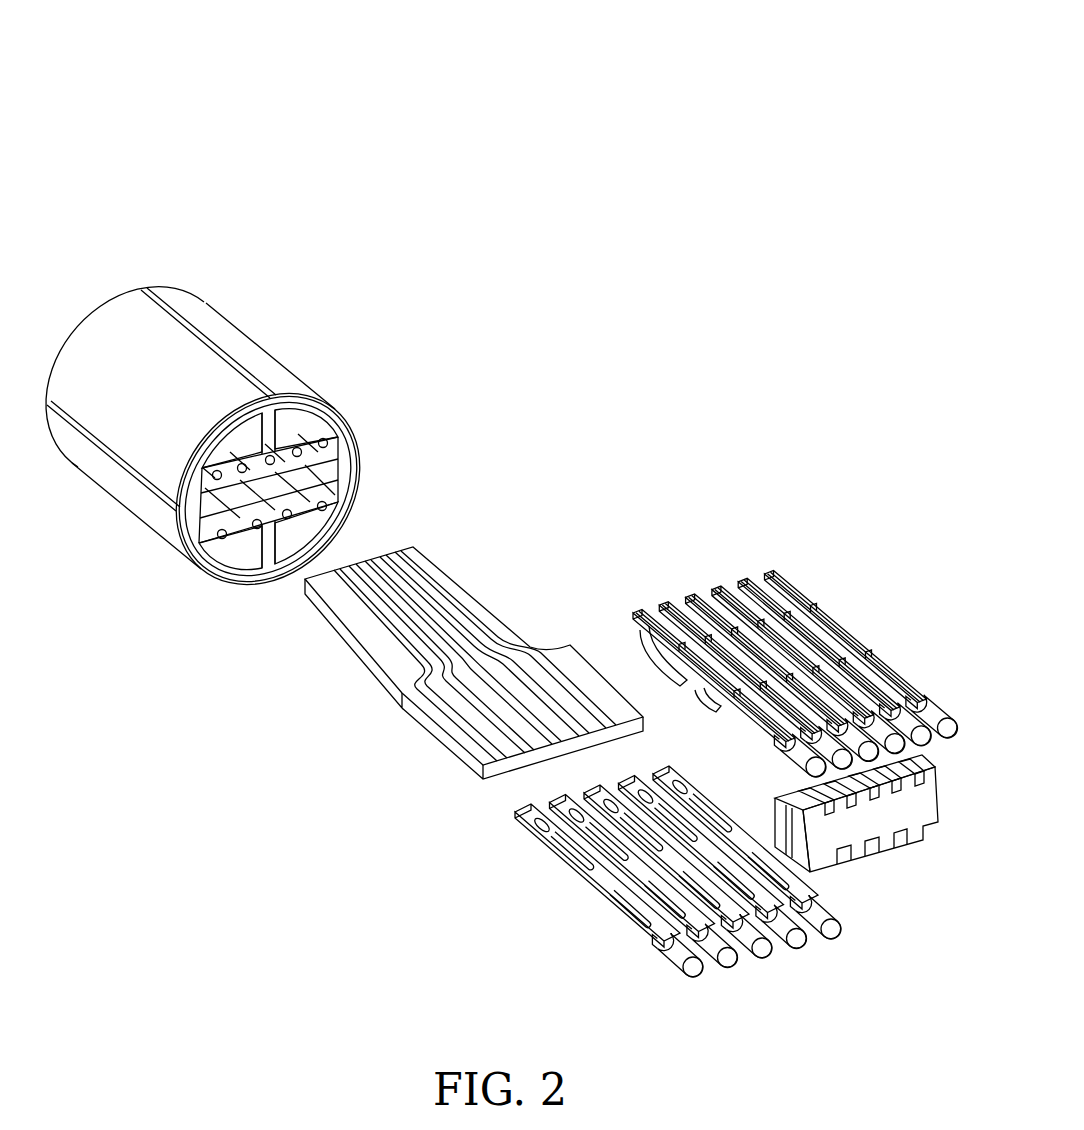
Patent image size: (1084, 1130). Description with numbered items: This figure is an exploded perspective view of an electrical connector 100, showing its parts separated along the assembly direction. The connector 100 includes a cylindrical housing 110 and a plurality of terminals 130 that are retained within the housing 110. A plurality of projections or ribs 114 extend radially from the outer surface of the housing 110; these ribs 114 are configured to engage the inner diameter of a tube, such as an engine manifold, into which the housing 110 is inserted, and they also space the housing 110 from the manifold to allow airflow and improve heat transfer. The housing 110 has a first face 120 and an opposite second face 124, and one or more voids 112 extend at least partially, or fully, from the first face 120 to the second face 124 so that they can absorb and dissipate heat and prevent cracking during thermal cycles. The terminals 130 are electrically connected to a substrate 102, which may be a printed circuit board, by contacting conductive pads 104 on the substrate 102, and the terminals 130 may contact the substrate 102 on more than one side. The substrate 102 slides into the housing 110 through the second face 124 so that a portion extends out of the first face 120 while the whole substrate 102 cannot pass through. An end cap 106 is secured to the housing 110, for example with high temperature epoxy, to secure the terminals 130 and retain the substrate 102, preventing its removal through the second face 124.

The electrical connector 100 is at (348, 95).
The substrate 102 is at (357, 637).
The conductive pads 104 is at (610, 692).
The end cap 106 is at (920, 842).
The housing 110 is at (118, 503).
The voids 112 is at (292, 414).
The projections or ribs 114 is at (207, 337).
The first face 120 is at (72, 266).
The second face 124 is at (386, 501).
The terminal 130 is at (563, 862).